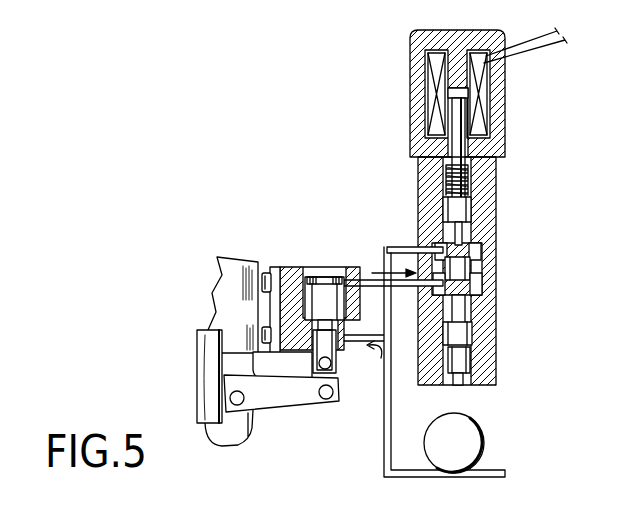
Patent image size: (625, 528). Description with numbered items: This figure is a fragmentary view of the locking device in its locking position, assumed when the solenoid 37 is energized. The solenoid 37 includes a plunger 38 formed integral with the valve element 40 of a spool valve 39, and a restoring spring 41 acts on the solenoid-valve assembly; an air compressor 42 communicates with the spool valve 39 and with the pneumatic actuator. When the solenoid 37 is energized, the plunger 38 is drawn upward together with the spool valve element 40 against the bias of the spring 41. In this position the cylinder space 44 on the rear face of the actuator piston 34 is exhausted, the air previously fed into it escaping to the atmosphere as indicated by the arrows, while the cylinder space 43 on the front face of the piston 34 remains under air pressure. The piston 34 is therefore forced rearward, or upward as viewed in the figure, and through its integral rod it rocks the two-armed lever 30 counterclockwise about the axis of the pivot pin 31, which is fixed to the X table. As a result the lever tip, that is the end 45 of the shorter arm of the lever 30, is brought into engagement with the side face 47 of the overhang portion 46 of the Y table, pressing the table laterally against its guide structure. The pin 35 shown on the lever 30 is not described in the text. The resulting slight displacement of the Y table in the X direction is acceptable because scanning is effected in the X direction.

The two-armed lever 30 is at (276, 410).
The pivot pin 31 is at (234, 410).
The piston 34 is at (339, 345).
The pin 35 is at (327, 403).
The solenoid 37 is at (504, 133).
The plunger 38 is at (462, 108).
The spool valve 39 is at (497, 226).
The valve element 40 is at (472, 270).
The restoring spring 41 is at (468, 182).
The air compressor 42 is at (484, 444).
The cylinder space 43 is at (353, 314).
The cylinder space 44 is at (324, 292).
The end of the shorter arm 45 is at (230, 368).
The overhang portion 46 is at (206, 335).
The side face 47 is at (229, 333).